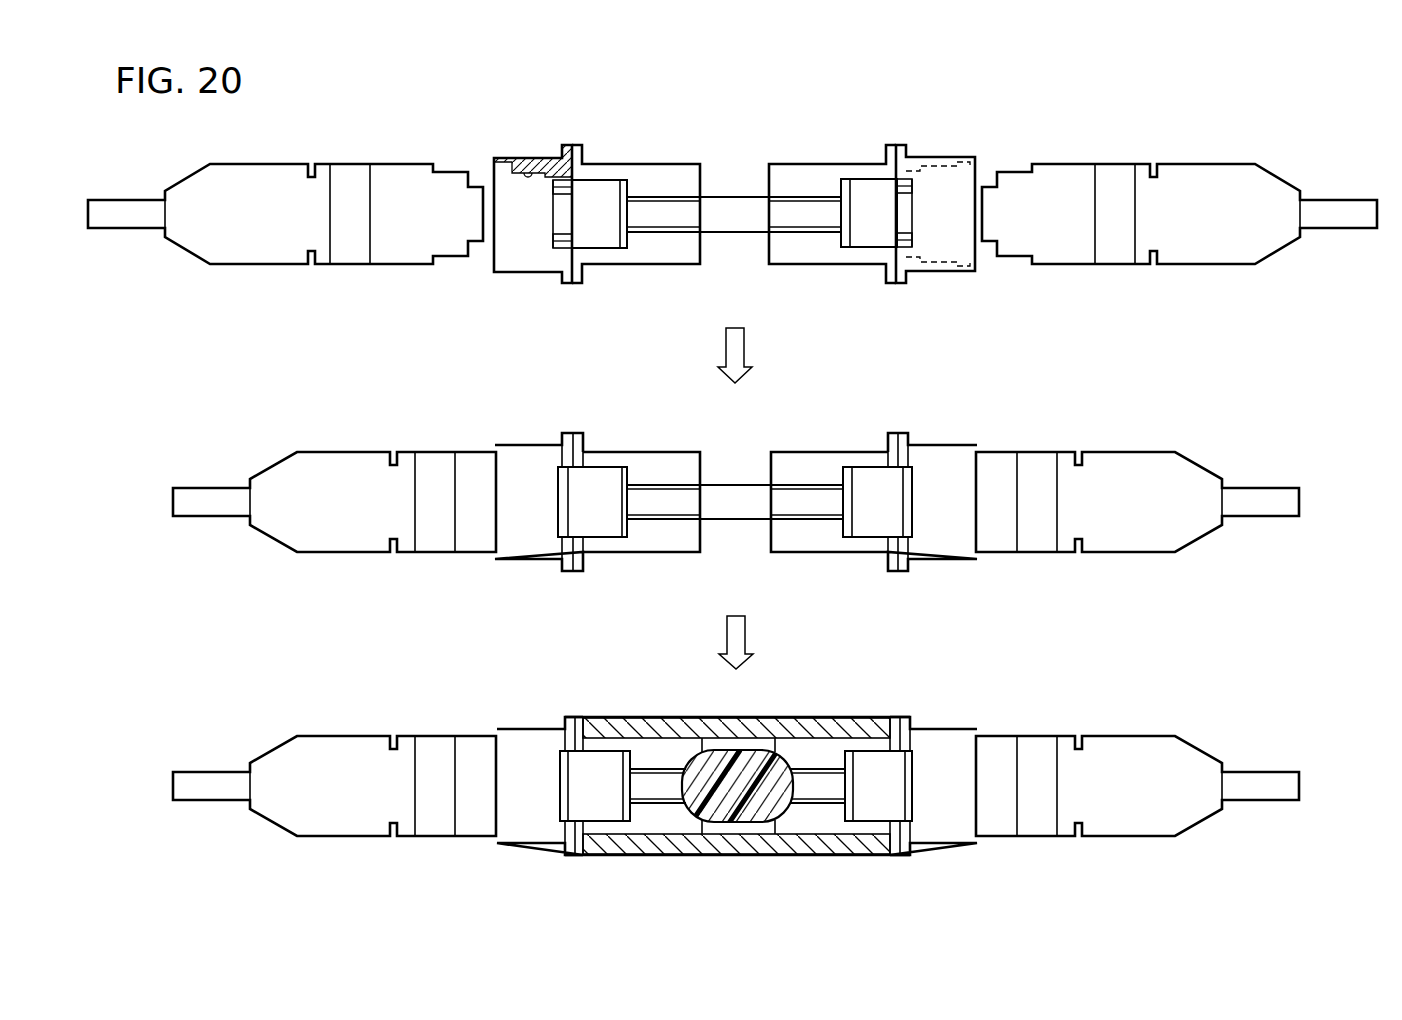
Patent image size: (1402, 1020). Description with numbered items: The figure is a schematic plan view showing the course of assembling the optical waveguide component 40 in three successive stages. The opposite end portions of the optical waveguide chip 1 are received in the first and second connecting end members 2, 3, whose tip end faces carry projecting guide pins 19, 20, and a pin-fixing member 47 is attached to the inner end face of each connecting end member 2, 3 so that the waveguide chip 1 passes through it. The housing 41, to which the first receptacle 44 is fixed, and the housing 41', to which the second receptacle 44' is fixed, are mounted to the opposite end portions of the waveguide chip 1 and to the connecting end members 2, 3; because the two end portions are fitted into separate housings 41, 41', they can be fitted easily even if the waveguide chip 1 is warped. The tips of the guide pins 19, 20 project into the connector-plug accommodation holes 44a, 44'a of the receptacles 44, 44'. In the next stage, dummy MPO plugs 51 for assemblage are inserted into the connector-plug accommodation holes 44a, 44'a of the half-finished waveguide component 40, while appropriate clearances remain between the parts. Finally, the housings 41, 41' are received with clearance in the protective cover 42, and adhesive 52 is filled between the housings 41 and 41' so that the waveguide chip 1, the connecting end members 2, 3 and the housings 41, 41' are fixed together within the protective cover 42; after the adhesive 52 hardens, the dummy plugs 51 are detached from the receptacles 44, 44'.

The optical waveguide chip 1 is at (722, 197).
The first connecting end member 2 is at (606, 190).
The second connecting end member 3 is at (875, 190).
The guide pin 19 is at (556, 200).
The guide pin 20 is at (561, 241).
The waveguide component 40 is at (876, 709).
The housing 41 is at (637, 469).
The housing 41' is at (832, 489).
The protective cover 42 is at (782, 718).
The first receptacle 44 is at (530, 477).
The connector-plug accommodation hole 44a is at (547, 162).
The second receptacle 44' is at (947, 500).
The connector-plug accommodation hole 44'a is at (969, 189).
The pin-fixing member 47 is at (838, 212).
The dummy MPO plug 51 is at (418, 161).
The adhesive 52 is at (716, 752).